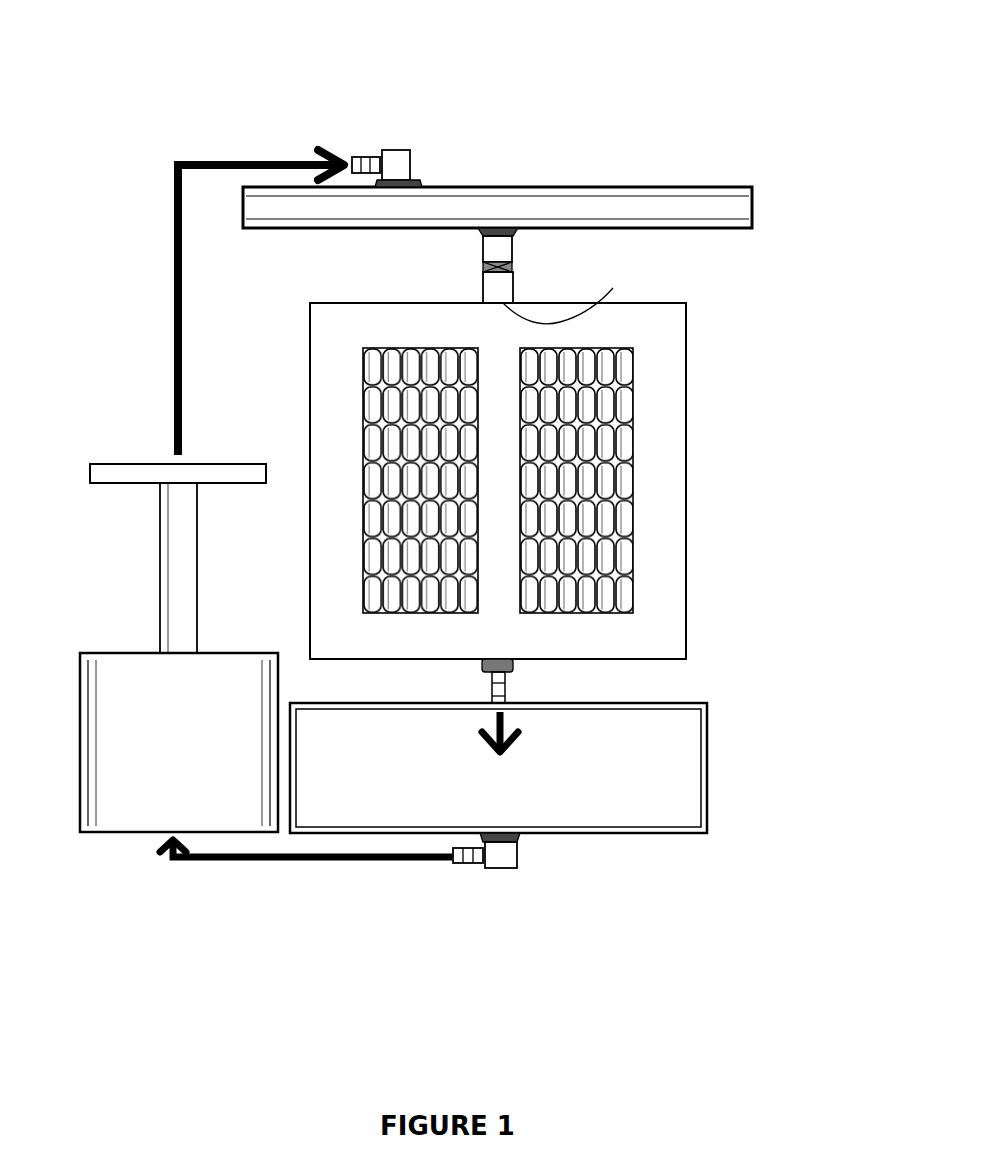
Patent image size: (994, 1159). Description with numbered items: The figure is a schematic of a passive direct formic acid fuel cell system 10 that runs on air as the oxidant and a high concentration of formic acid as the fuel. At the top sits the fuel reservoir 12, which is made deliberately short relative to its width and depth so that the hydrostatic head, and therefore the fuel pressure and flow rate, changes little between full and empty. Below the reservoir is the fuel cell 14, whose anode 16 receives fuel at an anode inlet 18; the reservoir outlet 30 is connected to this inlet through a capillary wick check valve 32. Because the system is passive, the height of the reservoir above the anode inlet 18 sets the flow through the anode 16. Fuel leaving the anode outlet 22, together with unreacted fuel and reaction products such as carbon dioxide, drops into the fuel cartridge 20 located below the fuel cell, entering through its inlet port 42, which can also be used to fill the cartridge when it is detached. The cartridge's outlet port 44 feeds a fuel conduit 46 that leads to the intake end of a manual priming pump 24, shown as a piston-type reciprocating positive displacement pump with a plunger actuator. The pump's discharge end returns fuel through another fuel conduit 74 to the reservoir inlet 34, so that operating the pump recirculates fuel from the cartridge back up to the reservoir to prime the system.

The passive direct formic acid fuel cell system 10 is at (745, 72).
The fuel reservoir 12 is at (752, 210).
The fuel cell 14 is at (662, 454).
The anode 16 is at (633, 387).
The anode inlet 18 is at (568, 287).
The fuel cartridge 20 is at (619, 833).
The anode outlet 22 is at (506, 683).
The manual priming pump 24 is at (102, 693).
The reservoir outlet 30 is at (498, 245).
The capillary wick check valve 32 is at (495, 287).
The reservoir inlet 34 is at (372, 160).
The inlet port 42 is at (651, 750).
The outlet port 44 is at (467, 865).
The fuel conduit 46 is at (298, 862).
The fuel conduit 74 is at (175, 320).